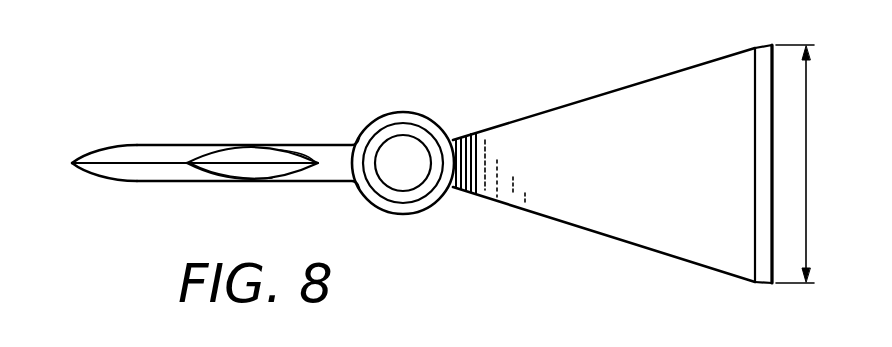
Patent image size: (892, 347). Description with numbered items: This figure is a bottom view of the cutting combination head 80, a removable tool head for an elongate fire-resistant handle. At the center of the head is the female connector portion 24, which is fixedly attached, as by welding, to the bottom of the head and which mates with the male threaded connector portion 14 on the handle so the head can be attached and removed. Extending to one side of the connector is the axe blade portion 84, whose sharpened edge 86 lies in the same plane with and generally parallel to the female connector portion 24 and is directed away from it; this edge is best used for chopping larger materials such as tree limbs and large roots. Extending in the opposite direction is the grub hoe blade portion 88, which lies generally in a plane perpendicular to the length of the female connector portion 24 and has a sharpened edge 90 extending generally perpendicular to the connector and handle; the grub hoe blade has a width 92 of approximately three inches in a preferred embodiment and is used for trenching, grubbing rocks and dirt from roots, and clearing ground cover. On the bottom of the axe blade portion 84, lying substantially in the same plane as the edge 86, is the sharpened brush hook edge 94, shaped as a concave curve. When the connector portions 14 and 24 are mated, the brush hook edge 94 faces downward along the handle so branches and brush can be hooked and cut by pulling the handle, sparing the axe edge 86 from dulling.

The male threaded connector portion 14 is at (393, 128).
The female connector portion 24 is at (440, 127).
The cutting combination head 80 is at (477, 175).
The axe blade portion 84 is at (323, 143).
The sharpened edge 86 is at (72, 163).
The grub hoe blade portion 88 is at (632, 210).
The sharpened edge 90 is at (773, 193).
The width 92 is at (807, 163).
The sharpened brush hook edge 94 is at (256, 163).